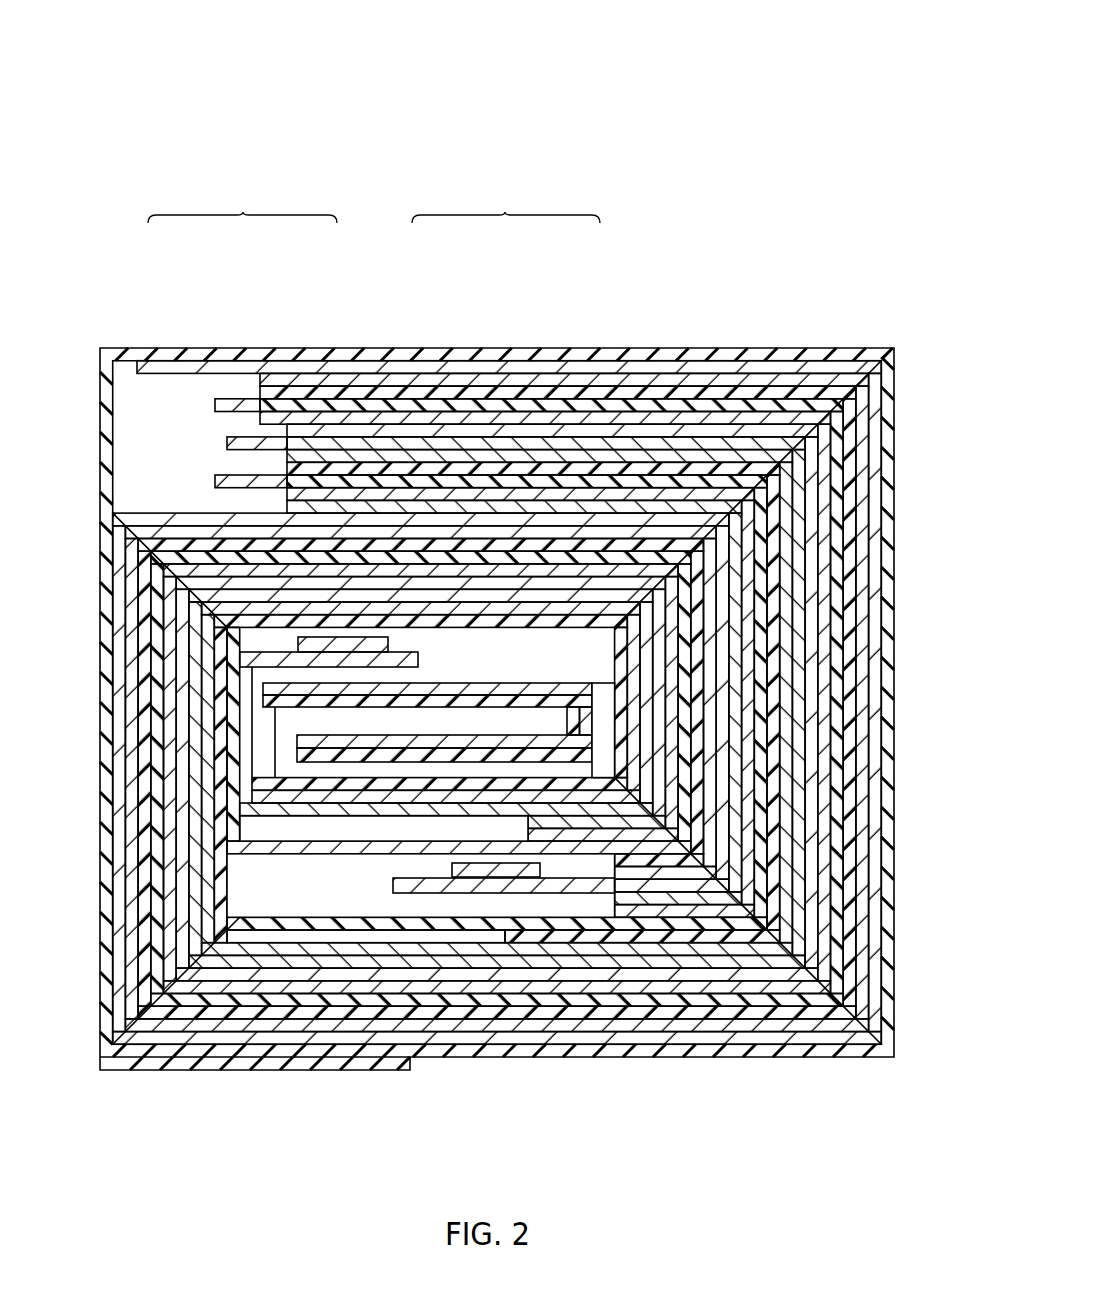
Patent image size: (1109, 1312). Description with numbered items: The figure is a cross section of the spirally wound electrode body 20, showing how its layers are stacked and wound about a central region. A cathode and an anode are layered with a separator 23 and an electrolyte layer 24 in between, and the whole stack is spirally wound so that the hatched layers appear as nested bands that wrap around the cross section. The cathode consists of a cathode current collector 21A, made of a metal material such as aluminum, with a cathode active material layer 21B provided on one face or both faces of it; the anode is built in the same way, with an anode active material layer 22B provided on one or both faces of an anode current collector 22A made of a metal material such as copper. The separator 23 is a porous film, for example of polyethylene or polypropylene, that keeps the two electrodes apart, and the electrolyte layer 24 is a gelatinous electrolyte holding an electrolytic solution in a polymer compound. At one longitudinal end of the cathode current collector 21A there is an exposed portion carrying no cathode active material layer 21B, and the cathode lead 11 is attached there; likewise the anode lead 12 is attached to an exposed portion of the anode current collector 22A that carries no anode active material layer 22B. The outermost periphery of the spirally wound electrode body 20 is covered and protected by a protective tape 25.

The spirally wound electrode body 20 is at (504, 571).
The cathode current collector 21A is at (481, 357).
The cathode active material layer 21B is at (550, 345).
The anode current collector 22A is at (509, 300).
The anode active material layer 22B is at (564, 370).
The separator 23 is at (551, 320).
The electrolyte layer 24 is at (558, 334).
The protective tape 25 is at (504, 649).
The cathode lead 11 is at (343, 887).
The anode lead 12 is at (504, 1000).